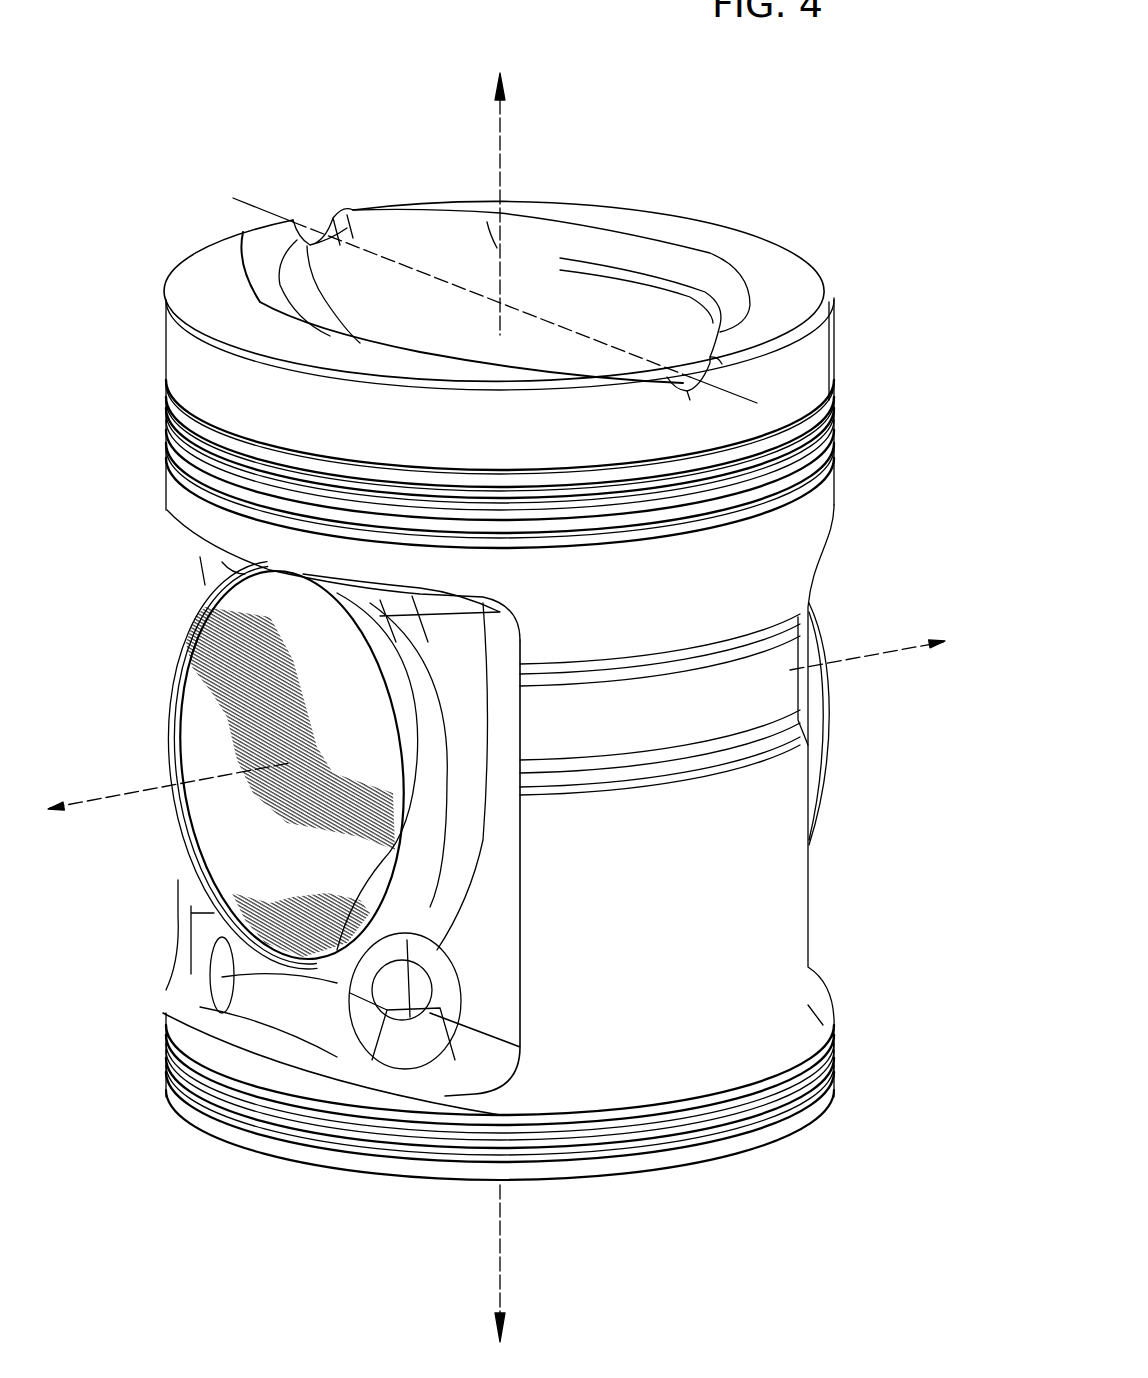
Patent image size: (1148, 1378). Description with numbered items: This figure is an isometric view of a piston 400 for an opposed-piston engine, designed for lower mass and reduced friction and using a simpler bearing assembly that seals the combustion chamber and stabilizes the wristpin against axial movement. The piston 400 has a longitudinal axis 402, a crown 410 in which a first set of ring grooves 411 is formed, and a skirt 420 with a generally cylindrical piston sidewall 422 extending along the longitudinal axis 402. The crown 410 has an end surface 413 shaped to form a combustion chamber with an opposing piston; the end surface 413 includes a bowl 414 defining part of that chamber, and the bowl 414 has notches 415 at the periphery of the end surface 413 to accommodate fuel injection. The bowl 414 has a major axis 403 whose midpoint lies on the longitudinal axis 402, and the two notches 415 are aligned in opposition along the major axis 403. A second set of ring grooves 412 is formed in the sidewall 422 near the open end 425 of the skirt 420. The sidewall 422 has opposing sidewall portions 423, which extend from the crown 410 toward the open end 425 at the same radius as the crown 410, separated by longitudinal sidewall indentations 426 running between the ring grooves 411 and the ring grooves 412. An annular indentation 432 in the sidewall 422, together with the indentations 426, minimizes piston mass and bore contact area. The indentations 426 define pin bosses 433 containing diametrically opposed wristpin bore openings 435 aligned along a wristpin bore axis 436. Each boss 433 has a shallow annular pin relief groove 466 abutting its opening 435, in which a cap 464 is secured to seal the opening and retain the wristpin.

The piston 400 is at (143, 387).
The longitudinal axis 402 is at (500, 135).
The major axis 403 is at (597, 338).
The crown 410 is at (868, 341).
The first set of ring grooves 411 is at (845, 380).
The second set of ring grooves 412 is at (843, 1030).
The end surface 413 is at (582, 190).
The bowl 414 is at (465, 341).
The notches 415 is at (333, 228).
The skirt 420 is at (852, 702).
The piston sidewall 422 is at (782, 547).
The sidewall portions 423 is at (748, 892).
The open end 425 is at (672, 1180).
The sidewall indentations 426 is at (487, 1000).
The annular indentation 432 is at (663, 713).
The pin bosses 433 is at (815, 790).
The wristpin bore openings 435 is at (820, 630).
The wristpin bore axis 436 is at (134, 795).
The cap 464 is at (204, 677).
The pin relief groove 466 is at (204, 616).